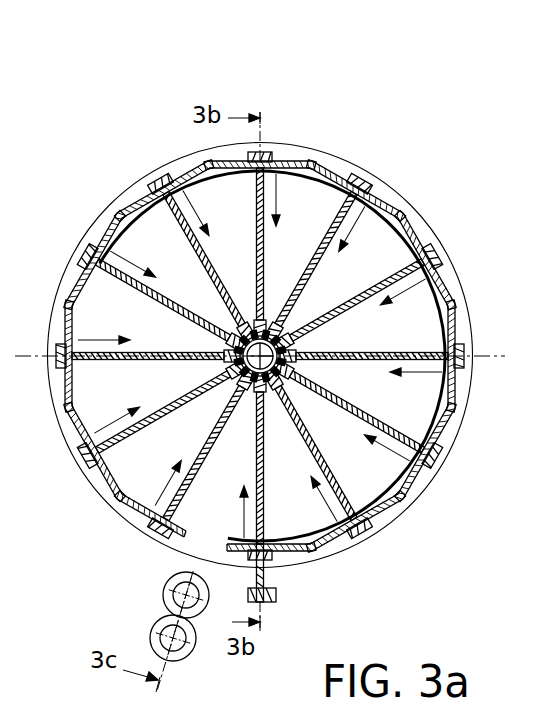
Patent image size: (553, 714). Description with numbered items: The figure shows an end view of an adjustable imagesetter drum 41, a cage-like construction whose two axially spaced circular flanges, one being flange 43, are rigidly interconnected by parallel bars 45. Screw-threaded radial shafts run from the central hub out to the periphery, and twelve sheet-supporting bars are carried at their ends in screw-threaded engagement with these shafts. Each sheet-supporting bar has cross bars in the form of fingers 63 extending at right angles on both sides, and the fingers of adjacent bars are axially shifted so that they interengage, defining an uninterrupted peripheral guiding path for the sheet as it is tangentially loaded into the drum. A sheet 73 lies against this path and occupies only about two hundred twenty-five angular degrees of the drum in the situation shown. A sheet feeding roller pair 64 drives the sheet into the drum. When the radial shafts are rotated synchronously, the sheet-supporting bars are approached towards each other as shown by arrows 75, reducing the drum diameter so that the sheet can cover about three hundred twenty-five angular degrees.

The drum 41 is at (378, 148).
The circular flange 43 is at (428, 218).
The parallel bars 45 is at (434, 258).
The fingers 63 is at (456, 332).
The sheet 73 is at (456, 400).
The arrows 75 is at (300, 182).
The sheet feeding roller pair 64 is at (143, 609).